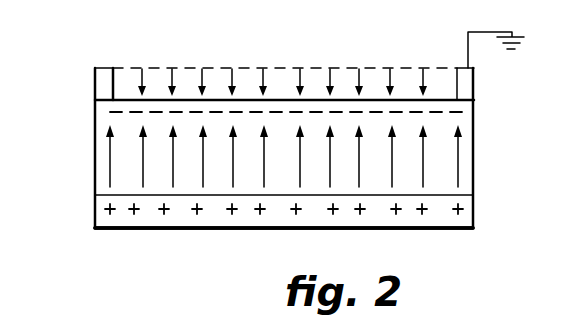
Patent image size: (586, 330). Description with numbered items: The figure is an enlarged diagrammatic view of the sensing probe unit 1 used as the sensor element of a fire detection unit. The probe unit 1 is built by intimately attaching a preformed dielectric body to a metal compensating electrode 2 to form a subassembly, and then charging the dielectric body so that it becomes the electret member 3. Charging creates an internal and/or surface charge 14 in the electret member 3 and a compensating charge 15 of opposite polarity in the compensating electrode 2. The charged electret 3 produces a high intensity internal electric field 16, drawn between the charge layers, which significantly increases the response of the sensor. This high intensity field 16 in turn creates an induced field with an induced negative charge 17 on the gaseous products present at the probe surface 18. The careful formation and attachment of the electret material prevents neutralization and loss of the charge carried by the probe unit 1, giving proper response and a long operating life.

The sensing probe unit 1 is at (48, 175).
The compensating electrode plate 2 is at (97, 230).
The electret member 3 is at (95, 143).
The surface charge 14 is at (118, 112).
The compensating charge 15 is at (231, 212).
The internal electric field 16 is at (392, 168).
The induced negative charge 17 is at (400, 68).
The probe surface 18 is at (283, 100).